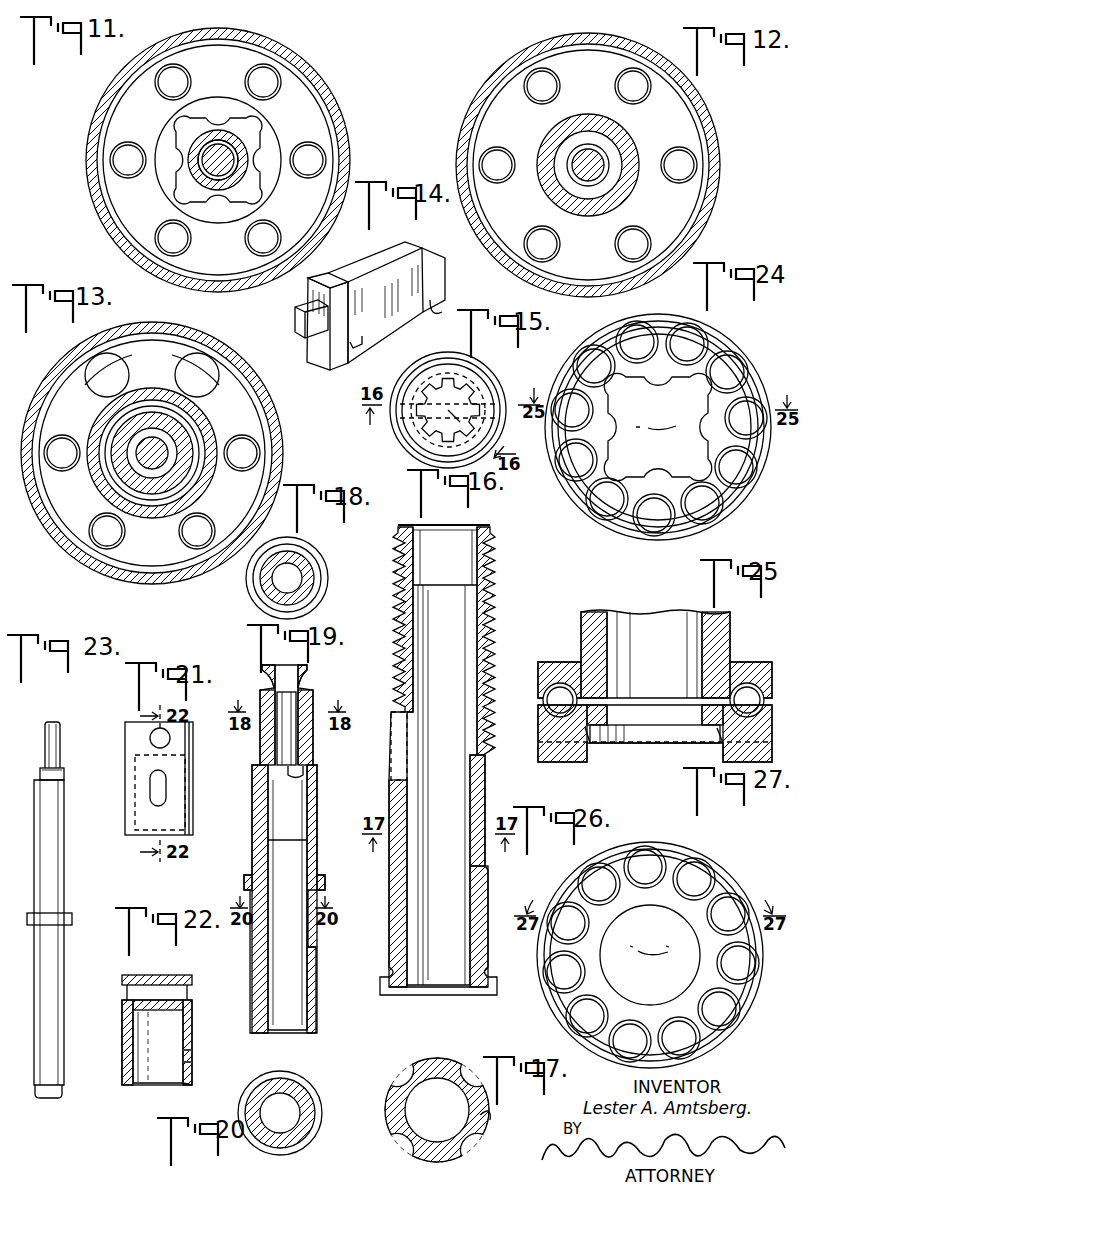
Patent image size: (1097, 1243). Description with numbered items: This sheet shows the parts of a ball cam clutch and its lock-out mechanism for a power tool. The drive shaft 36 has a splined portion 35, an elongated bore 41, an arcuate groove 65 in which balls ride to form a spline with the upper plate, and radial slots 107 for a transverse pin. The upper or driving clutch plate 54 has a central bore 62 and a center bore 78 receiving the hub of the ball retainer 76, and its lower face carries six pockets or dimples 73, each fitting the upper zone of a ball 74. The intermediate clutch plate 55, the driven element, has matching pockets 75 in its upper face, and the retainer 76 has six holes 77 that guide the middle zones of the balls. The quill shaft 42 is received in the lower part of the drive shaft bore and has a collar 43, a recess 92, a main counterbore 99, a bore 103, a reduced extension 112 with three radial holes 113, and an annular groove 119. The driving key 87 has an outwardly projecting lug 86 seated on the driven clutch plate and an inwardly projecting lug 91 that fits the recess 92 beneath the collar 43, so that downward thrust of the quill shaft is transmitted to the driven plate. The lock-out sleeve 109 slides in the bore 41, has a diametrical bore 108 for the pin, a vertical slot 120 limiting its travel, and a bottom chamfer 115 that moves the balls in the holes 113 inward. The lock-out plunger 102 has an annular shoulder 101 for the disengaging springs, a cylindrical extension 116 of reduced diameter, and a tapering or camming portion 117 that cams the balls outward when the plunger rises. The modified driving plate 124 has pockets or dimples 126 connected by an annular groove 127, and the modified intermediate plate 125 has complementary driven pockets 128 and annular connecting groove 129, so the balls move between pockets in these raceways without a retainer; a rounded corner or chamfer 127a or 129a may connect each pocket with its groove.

In FIG. 11, the upper or driving clutch plate 54 is at (243, 57).
In FIG. 11, the center bore 78 is at (270, 133).
In FIG. 11, the pockets or dimples 73 is at (123, 134).
In FIG. 11, the central bore 62 is at (196, 150).
In FIG. 11, the quill shaft 42 is at (242, 172).
In FIG. 12, the quill shaft 42 is at (586, 136).
In FIG. 18, the quill shaft 42 is at (318, 617).
In FIG. 19, the quill shaft 42 is at (322, 814).
In FIG. 20, the quill shaft 42 is at (290, 1160).
In FIG. 12, the intermediate clutch plate 55 is at (700, 132).
In FIG. 12, the pockets 75 is at (690, 170).
In FIG. 12, the drive shaft 36 is at (596, 215).
In FIG. 13, the drive shaft 36 is at (115, 477).
In FIG. 15, the drive shaft 36 is at (392, 452).
In FIG. 16, the drive shaft 36 is at (506, 618).
In FIG. 17, the drive shaft 36 is at (432, 1154).
In FIG. 13, the ball retainer 76 is at (143, 393).
In FIG. 13, the holes 77 is at (222, 386).
In FIG. 13, the ball 74 is at (252, 457).
In FIG. 14, the inwardly projecting lug 91 is at (318, 280).
In FIG. 14, the driving key 87 is at (436, 312).
In FIG. 14, the outwardly projecting lug 86 is at (345, 352).
In FIG. 15, the splined portion 35 is at (466, 405).
In FIG. 16, the splined portion 35 is at (470, 570).
In FIG. 16, the radial slots 107 is at (405, 740).
In FIG. 17, the radial slots 107 is at (482, 1125).
In FIG. 16, the groove 65 is at (488, 800).
In FIG. 17, the groove 65 is at (462, 1068).
In FIG. 16, the elongated bore 41 is at (408, 882).
In FIG. 17, the elongated bore 41 is at (432, 1150).
In FIG. 18, the reduced extension 112 is at (300, 563).
In FIG. 19, the reduced extension 112 is at (314, 708).
In FIG. 18, the radial holes 113 is at (305, 585).
In FIG. 19, the radial holes 113 is at (304, 728).
In FIG. 19, the annular groove 119 is at (308, 669).
In FIG. 19, the bore 103 is at (305, 772).
In FIG. 19, the main counterbore 99 is at (305, 841).
In FIG. 19, the collar 43 is at (325, 884).
In FIG. 19, the recess 92 is at (316, 955).
In FIG. 20, the recess 92 is at (300, 1100).
In FIG. 21, the diametrical bore 108 is at (150, 738).
In FIG. 22, the diametrical bore 108 is at (192, 980).
In FIG. 21, the lock-out sleeve 109 is at (121, 789).
In FIG. 22, the lock-out sleeve 109 is at (212, 1078).
In FIG. 21, the vertical slot 120 is at (166, 790).
In FIG. 22, the vertical slot 120 is at (186, 1058).
In FIG. 22, the chamfer 115 is at (178, 1088).
In FIG. 23, the cylindrical extension 116 is at (45, 740).
In FIG. 23, the tapering or camming portion 117 is at (40, 774).
In FIG. 23, the lock-out plunger 102 is at (26, 884).
In FIG. 23, the annular shoulder 101 is at (72, 918).
In FIG. 24, the driving plate 124 is at (740, 505).
In FIG. 25, the driving plate 124 is at (730, 640).
In FIG. 24, the pockets or dimples 126 is at (688, 353).
In FIG. 25, the pockets or dimples 126 is at (580, 690).
In FIG. 24, the annular groove 127 is at (633, 500).
In FIG. 25, the annular groove 127 is at (572, 695).
In FIG. 24, the rounded corner or chamfer 127a is at (740, 396).
In FIG. 27, the intermediate plate 125 is at (567, 762).
In FIG. 26, the intermediate plate 125 is at (756, 1022).
In FIG. 27, the driven pockets 128 is at (712, 737).
In FIG. 26, the driven pockets 128 is at (690, 898).
In FIG. 27, the annular connecting groove 129 is at (595, 740).
In FIG. 26, the annular connecting groove 129 is at (680, 858).
In FIG. 26, the rounded corner or chamfer 129a is at (680, 853).